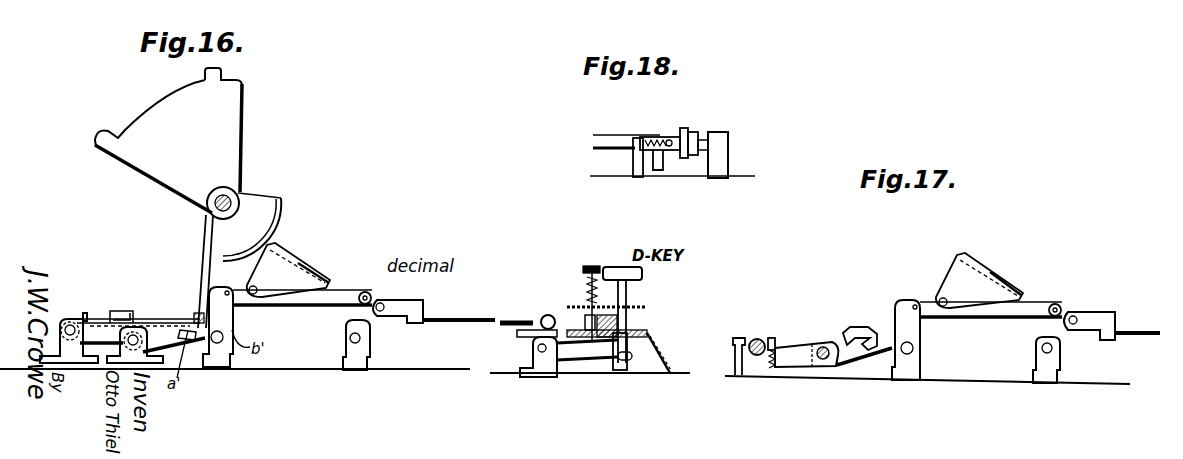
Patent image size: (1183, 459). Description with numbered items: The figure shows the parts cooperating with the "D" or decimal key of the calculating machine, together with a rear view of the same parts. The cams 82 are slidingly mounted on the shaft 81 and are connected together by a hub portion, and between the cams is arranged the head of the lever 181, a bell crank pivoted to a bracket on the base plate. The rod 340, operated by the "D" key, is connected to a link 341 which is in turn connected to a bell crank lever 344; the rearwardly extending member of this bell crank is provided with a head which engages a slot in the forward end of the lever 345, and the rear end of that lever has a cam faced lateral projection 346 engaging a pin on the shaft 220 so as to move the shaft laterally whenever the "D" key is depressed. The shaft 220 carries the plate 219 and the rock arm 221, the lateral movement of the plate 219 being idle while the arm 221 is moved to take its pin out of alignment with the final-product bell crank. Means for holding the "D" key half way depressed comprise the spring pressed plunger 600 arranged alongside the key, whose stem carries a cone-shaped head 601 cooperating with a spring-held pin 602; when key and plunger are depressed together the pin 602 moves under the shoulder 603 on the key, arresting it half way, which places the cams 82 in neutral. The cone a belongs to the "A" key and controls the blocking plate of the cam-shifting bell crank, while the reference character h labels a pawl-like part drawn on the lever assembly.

In FIG. 16, the cam 82 is at (232, 114).
In FIG. 16, the shaft 81 is at (240, 188).
In FIG. 16, the lever 181 is at (196, 256).
In FIG. 16, the shaft 220 is at (68, 319).
In FIG. 18, the shaft 220 is at (622, 138).
In FIG. 17, the shaft 220 is at (760, 339).
In FIG. 16, the rock arm 221 is at (97, 336).
In FIG. 16, the plate 219 is at (133, 317).
In FIG. 16, the bell crank lever 344 is at (232, 317).
In FIG. 17, the bell crank lever 344 is at (920, 323).
In FIG. 16, the link 341 is at (346, 316).
In FIG. 17, the link 341 is at (1035, 322).
In FIG. 16, the rod 340 is at (462, 324).
In FIG. 17, the lever 345 is at (797, 350).
In FIG. 18, the cam faced lateral projection 346 is at (665, 160).
In FIG. 17, the cam faced lateral projection 346 is at (773, 368).
In FIG. 16, the spring pressed plunger 600 is at (592, 268).
In FIG. 16, the cone-shaped head 601 is at (586, 323).
In FIG. 16, the pin 602 is at (617, 320).
In FIG. 16, the shoulder 603 is at (628, 331).
In FIG. 16, the cone a is at (192, 308).
In FIG. 16, the pawl h is at (309, 273).
In FIG. 17, the pawl h is at (998, 284).